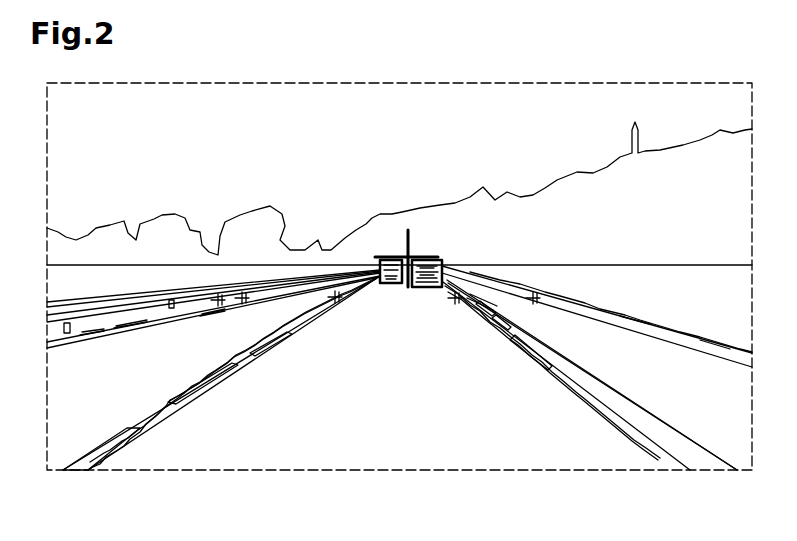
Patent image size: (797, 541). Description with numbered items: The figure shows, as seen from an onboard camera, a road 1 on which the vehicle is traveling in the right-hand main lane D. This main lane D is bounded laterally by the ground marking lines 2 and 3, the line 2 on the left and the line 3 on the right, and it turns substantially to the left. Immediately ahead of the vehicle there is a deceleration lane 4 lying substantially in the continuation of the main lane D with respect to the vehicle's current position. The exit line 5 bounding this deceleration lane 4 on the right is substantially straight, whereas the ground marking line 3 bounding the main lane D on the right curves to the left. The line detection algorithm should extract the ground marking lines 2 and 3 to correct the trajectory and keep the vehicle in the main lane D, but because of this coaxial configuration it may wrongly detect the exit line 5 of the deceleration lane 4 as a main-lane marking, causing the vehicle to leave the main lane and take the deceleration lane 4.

The road 1 is at (160, 352).
The ground marking line 2 is at (183, 398).
The ground marking line 3 is at (532, 357).
The deceleration lane 4 is at (455, 284).
The exit line 5 is at (565, 362).
The main lane D is at (364, 448).